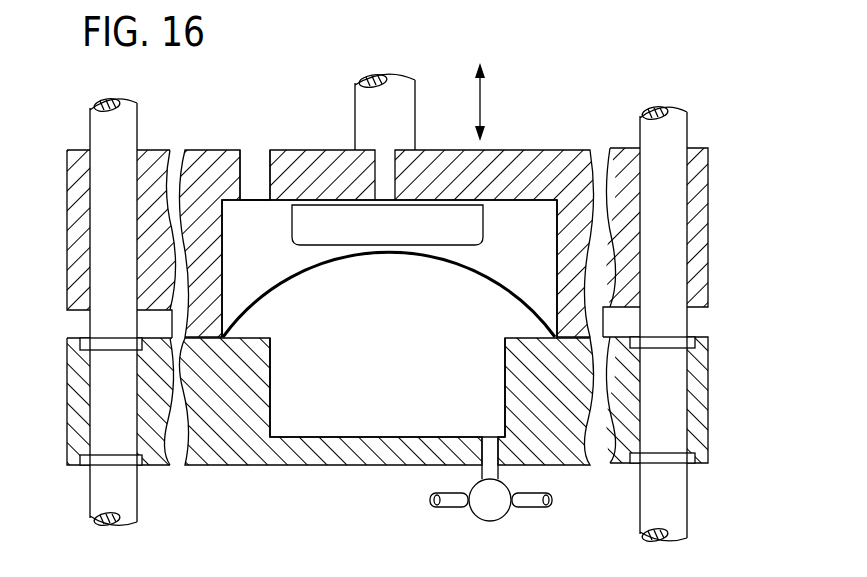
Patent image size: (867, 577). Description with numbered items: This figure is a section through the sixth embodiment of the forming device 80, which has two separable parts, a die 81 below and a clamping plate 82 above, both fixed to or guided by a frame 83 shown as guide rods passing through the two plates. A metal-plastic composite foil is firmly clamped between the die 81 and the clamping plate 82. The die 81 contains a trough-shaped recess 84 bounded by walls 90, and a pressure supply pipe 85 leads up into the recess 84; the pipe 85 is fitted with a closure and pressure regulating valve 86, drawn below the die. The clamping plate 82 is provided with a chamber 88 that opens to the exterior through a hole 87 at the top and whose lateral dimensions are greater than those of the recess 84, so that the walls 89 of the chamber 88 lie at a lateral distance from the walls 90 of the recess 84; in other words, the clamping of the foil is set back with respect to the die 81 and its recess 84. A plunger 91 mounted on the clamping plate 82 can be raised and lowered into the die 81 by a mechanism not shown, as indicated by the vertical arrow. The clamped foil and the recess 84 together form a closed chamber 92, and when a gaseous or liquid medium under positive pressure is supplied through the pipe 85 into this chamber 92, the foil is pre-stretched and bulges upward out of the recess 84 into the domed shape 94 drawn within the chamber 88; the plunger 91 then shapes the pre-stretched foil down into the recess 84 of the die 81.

The device 80 is at (577, 138).
The die 81 is at (695, 428).
The clamping plate 82 is at (698, 240).
The frame 83 is at (118, 490).
The trough-shaped recess 84 is at (338, 423).
The pressure supply pipe 85 is at (497, 472).
The closure and pressure regulating valve 86 is at (483, 513).
The hole 87 is at (260, 160).
The chamber 88 is at (278, 220).
The walls of the recess in the clamping plate 89 is at (222, 248).
The walls of the recess in the die 90 is at (270, 392).
The plunger 91 is at (432, 222).
The closed chamber 92 is at (402, 419).
The domed shape 94 is at (327, 267).